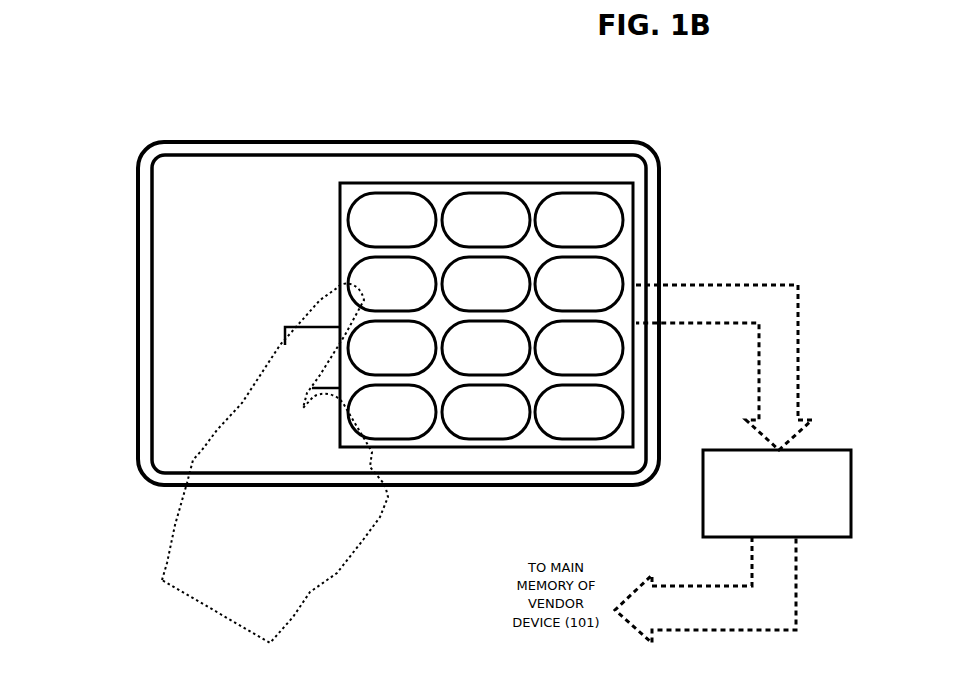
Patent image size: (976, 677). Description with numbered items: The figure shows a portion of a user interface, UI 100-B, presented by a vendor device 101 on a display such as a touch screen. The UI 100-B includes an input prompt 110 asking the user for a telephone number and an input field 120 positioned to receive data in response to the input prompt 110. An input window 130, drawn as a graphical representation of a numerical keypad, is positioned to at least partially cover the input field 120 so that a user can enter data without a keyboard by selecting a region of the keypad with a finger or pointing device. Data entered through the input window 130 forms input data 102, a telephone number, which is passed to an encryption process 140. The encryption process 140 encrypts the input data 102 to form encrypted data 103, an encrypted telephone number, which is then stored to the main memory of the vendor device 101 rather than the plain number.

The vendor device 101 is at (138, 206).
The user interface 100-B is at (283, 203).
The input prompt 110 is at (317, 243).
The input field 120 is at (270, 342).
The input window 130 is at (541, 183).
The input data 102 is at (712, 285).
The encryption process 140 is at (777, 493).
The encrypted data 103 is at (712, 598).